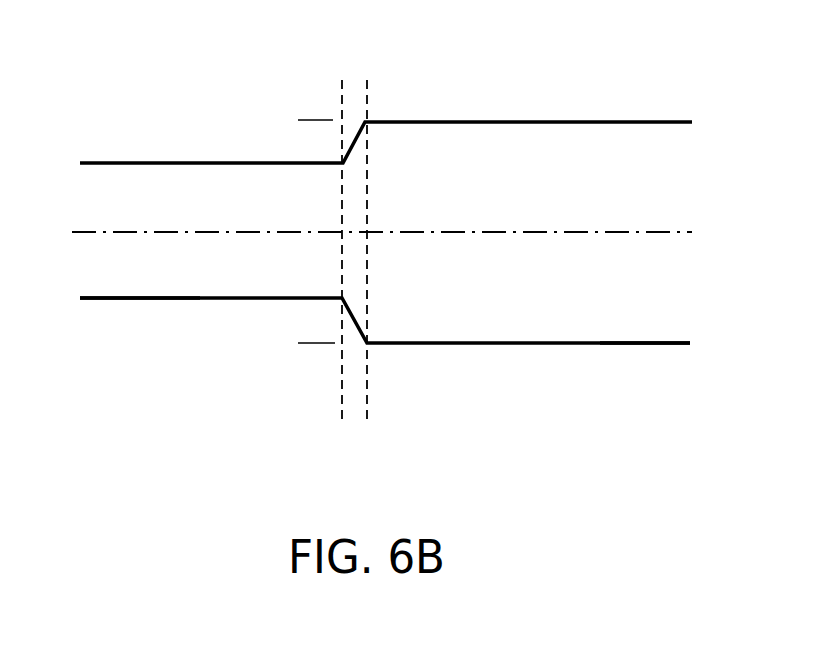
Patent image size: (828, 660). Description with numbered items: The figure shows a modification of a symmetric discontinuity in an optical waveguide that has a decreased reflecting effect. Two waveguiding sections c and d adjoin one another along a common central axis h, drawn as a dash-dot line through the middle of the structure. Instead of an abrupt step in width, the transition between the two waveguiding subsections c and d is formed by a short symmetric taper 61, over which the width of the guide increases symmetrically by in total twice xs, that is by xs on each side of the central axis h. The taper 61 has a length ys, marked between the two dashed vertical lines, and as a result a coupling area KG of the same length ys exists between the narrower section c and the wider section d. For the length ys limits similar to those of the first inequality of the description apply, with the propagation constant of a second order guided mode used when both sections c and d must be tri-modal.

The short symmetric taper 61 is at (350, 212).
The coupling area KG is at (342, 78).
The central axis h is at (242, 232).
The waveguiding section c is at (180, 278).
The waveguiding section d is at (622, 322).
The half width change xs is at (298, 402).
The taper length ys is at (313, 407).